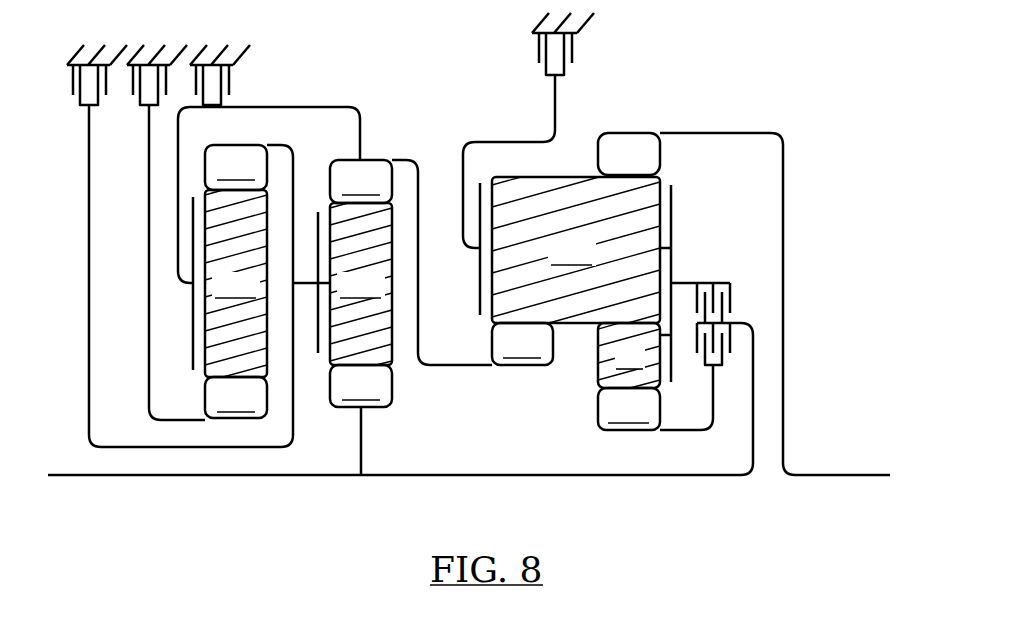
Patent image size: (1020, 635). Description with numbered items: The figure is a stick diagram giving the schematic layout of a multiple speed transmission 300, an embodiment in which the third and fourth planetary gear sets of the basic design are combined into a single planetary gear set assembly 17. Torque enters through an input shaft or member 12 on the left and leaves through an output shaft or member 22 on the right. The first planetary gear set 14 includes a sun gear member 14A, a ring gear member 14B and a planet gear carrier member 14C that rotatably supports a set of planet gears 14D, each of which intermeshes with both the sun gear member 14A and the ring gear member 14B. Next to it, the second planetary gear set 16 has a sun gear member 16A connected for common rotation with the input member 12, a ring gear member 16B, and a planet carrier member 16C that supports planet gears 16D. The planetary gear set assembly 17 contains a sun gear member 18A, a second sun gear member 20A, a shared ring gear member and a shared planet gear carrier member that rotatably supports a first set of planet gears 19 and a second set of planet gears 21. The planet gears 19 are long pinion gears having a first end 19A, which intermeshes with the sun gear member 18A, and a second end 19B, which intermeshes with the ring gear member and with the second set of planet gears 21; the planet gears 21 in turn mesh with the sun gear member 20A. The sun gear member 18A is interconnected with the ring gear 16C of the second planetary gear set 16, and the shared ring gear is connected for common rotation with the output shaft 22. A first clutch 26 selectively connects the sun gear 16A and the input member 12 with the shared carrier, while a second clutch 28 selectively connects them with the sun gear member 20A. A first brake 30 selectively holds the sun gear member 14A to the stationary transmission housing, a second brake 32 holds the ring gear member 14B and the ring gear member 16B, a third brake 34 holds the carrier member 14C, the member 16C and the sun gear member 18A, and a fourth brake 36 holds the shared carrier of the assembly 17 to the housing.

The input shaft or member 12 is at (98, 478).
The output shaft or member 22 is at (827, 478).
The first planetary gear set 14 is at (182, 328).
The sun gear member 14A is at (236, 397).
The ring gear member 14B is at (236, 167).
The planet gear carrier member 14C is at (192, 313).
The planet gears 14D is at (236, 283).
The second planetary gear set 16 is at (387, 317).
The sun gear member 16A is at (361, 420).
The ring gear member 16B is at (318, 212).
The planet carrier member 16C is at (361, 181).
The planet gears 16D is at (361, 284).
The planetary gear set assembly 17 is at (620, 237).
The sun gear member 18A is at (522, 344).
The first set of planet gears 19 is at (566, 255).
The first end 19A is at (516, 175).
The second end 19B is at (576, 250).
The sun gear member 20A is at (629, 409).
The second set of planet gears 21 is at (629, 355).
The first clutch 26 is at (731, 297).
The second clutch 28 is at (731, 341).
The first brake 30 is at (134, 82).
The second brake 32 is at (74, 82).
The third brake 34 is at (230, 80).
The fourth brake 36 is at (538, 52).
The multiple speed transmission 300 is at (752, 81).